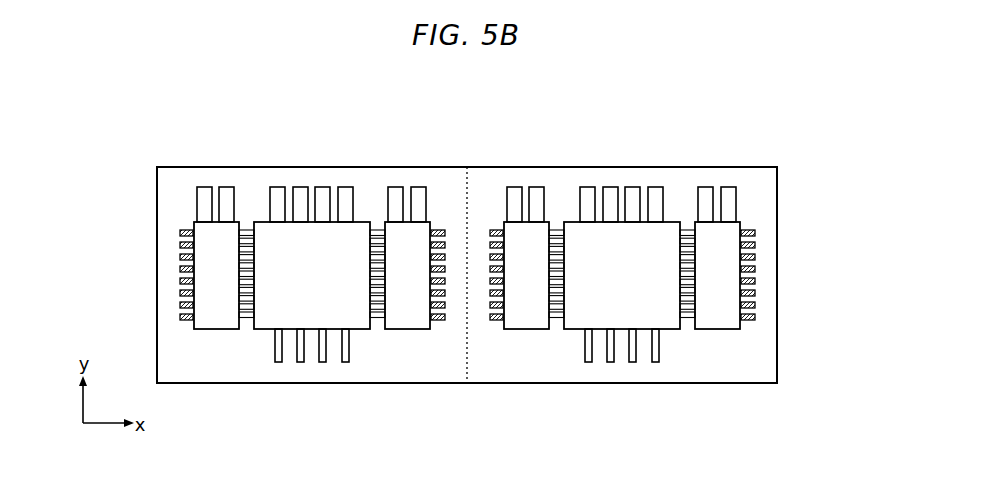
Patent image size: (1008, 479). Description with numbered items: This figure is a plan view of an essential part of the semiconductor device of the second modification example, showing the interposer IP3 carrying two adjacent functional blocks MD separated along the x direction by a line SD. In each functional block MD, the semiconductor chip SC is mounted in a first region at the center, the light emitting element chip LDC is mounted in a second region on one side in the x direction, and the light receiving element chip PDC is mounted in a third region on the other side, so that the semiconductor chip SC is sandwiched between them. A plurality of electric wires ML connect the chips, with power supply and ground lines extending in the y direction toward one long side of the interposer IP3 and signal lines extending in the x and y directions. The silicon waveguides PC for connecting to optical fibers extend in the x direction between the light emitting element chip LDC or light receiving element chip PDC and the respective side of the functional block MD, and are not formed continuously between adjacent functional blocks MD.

The interposer IP3 is at (753, 161).
The sawing direction SD is at (654, 97).
The functional block MD is at (445, 376).
The light receiving element chip PDC is at (218, 300).
The semiconductor chip SC is at (313, 300).
The light emitting element chip LDC is at (410, 300).
The silicon waveguide PC is at (437, 230).
The electric wire ML is at (203, 193).